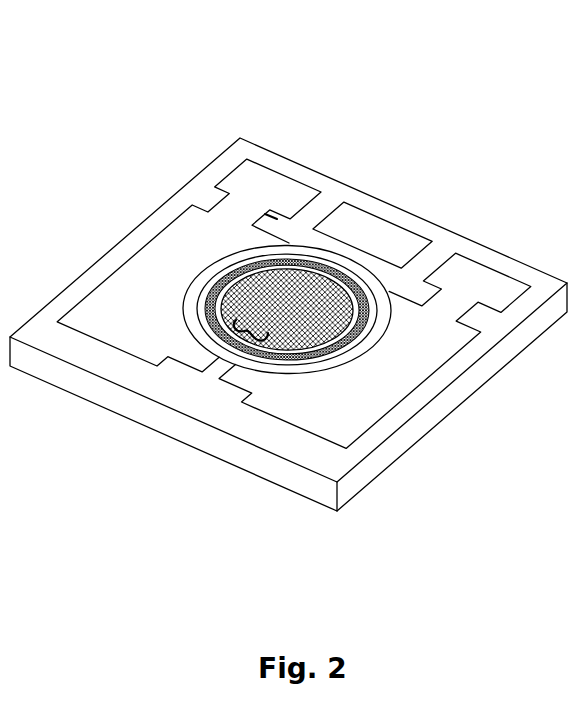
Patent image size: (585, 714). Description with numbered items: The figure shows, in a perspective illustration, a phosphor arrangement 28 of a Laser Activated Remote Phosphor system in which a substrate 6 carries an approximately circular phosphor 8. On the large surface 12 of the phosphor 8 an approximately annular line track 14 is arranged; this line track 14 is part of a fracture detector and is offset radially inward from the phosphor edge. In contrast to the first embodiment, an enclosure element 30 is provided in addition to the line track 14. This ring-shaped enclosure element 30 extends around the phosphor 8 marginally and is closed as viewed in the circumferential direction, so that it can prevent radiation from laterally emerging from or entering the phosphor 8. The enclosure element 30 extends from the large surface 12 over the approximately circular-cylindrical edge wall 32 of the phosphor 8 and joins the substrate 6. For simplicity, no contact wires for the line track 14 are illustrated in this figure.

The phosphor arrangement 28 is at (407, 165).
The substrate 6 is at (487, 363).
The phosphor 8 is at (320, 303).
The large surface 12 is at (285, 283).
The line track 14 is at (277, 343).
The enclosure element 30 is at (317, 352).
The edge wall 32 is at (240, 350).